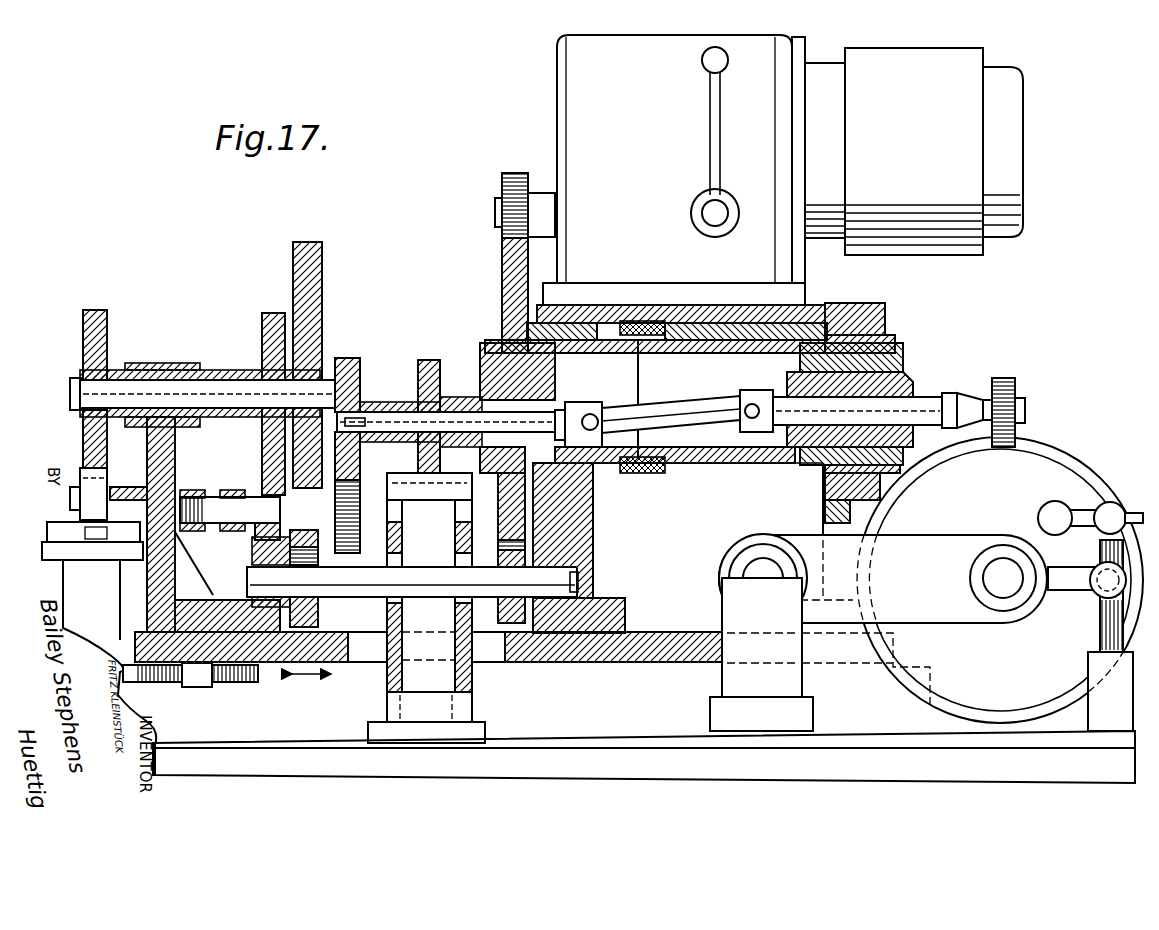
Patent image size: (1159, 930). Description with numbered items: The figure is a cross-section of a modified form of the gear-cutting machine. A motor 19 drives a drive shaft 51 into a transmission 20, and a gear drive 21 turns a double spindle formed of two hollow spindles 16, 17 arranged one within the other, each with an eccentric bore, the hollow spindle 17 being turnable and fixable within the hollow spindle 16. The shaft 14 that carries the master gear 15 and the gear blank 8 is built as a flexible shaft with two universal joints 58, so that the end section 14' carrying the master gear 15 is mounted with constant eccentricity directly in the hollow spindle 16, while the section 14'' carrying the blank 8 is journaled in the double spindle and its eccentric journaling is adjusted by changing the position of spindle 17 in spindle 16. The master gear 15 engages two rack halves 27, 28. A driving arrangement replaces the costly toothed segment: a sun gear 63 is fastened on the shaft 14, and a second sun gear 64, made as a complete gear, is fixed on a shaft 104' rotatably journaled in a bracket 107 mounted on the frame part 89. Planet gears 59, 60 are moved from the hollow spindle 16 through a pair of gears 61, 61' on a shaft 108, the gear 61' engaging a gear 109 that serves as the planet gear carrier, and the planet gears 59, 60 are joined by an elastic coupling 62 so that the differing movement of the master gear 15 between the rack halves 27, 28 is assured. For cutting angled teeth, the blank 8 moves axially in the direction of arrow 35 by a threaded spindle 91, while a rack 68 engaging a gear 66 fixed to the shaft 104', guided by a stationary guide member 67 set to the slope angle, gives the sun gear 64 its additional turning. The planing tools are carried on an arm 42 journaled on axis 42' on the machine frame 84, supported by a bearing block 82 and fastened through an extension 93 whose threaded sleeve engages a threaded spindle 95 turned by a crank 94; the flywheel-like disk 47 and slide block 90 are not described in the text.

The gear blank 8 is at (1020, 388).
The shaft 14 is at (671, 399).
The end section of the shaft 14' is at (446, 410).
The shaft section carrying the blank 14'' is at (883, 394).
The master gear 15 is at (430, 360).
The hollow spindle 16 is at (765, 340).
The hollow spindle 17 is at (920, 380).
The motor 19 is at (948, 248).
The transmission 20 is at (557, 78).
The gear drive 21 is at (502, 275).
The tooth segment 27 is at (429, 486).
The tooth segment 28 is at (426, 621).
The arrow 35 is at (311, 687).
The arm 42 is at (883, 562).
The axis 42' is at (743, 573).
The flywheel 47 is at (1000, 580).
The drive shaft 51 is at (495, 213).
The universal joints 58 is at (607, 387).
The planet gear 59 is at (372, 490).
The planet gear 60 is at (258, 536).
The gear 61 is at (502, 581).
The gear 61' is at (326, 578).
The elastic coupling 62 is at (213, 488).
The sun gear 63 is at (345, 358).
The sun gear 64 is at (268, 318).
The gear 66 is at (107, 330).
The guide member 67 is at (63, 532).
The rack 68 is at (86, 492).
The bearing block 82 is at (722, 685).
The machine frame 84 is at (537, 735).
The frame part 89 is at (102, 594).
The slide block 90 is at (212, 687).
The threaded spindle 91 is at (143, 683).
The extension 93 is at (1092, 592).
The crank 94 is at (1103, 504).
The threaded spindle 95 is at (1100, 644).
The shaft 104' is at (207, 382).
The bracket 107 is at (176, 441).
The shaft 108 is at (446, 590).
The gear 109 is at (310, 278).